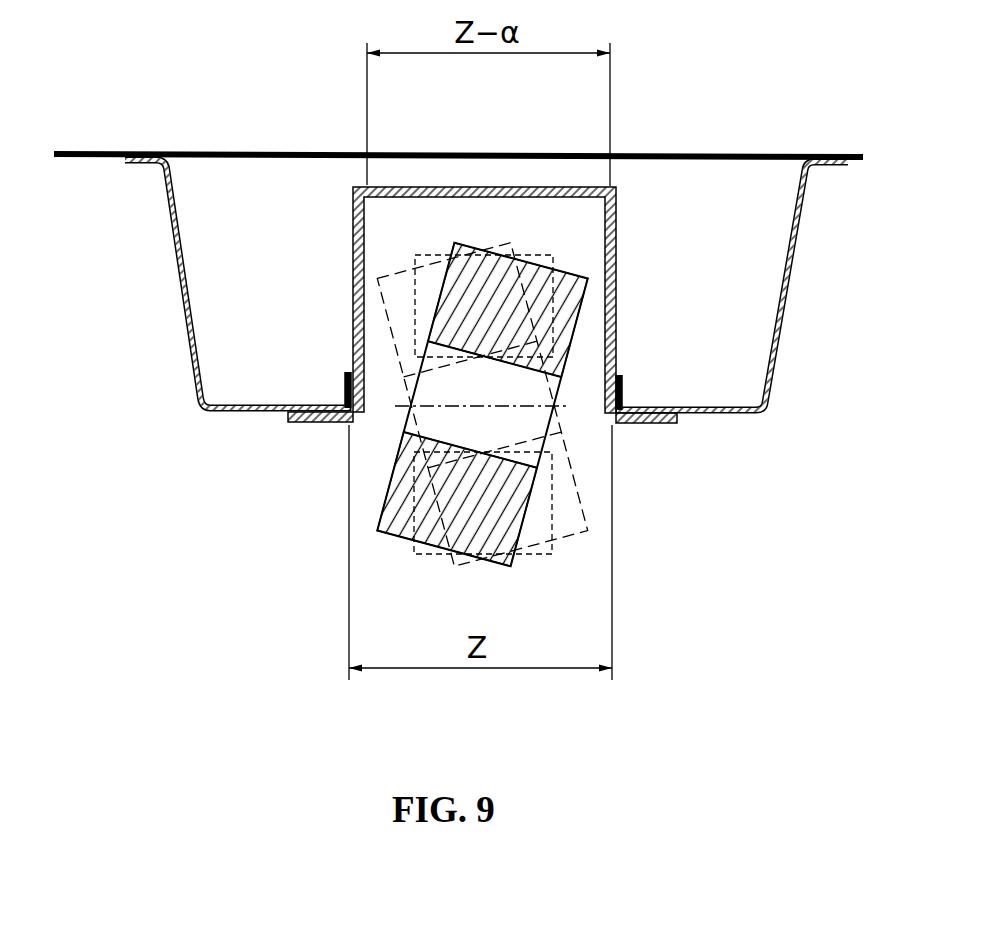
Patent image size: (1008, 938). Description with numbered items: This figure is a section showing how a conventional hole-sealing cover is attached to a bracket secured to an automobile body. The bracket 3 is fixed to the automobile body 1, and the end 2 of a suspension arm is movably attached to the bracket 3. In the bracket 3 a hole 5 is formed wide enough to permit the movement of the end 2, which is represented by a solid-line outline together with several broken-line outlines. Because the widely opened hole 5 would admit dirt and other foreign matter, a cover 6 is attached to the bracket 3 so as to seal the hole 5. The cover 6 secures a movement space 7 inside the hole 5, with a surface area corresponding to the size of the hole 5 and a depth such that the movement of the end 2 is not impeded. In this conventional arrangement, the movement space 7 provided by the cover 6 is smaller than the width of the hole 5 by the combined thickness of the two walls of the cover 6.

The automobile body 1 is at (709, 153).
The end of suspension arm 2 is at (568, 288).
The bracket 3 is at (178, 262).
The hole 5 is at (356, 383).
The cover 6 is at (517, 181).
The movement space 7 is at (412, 239).